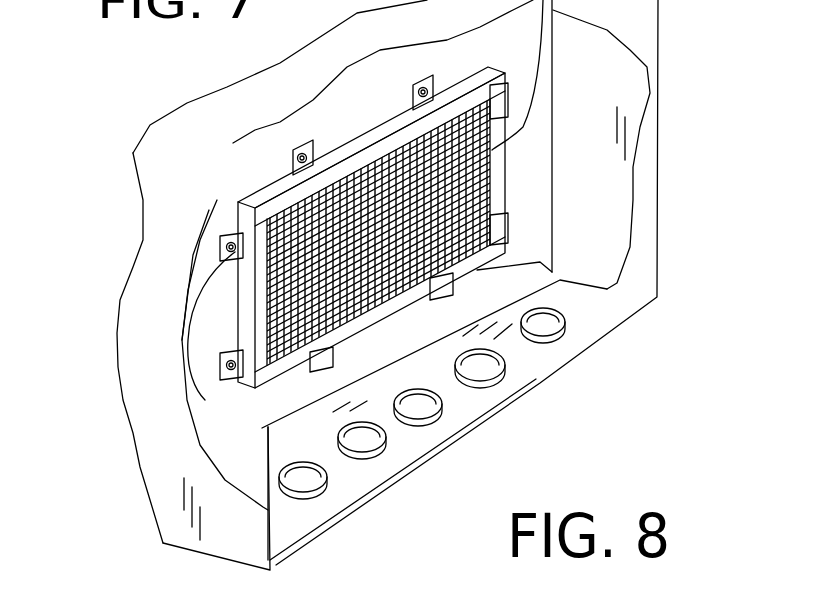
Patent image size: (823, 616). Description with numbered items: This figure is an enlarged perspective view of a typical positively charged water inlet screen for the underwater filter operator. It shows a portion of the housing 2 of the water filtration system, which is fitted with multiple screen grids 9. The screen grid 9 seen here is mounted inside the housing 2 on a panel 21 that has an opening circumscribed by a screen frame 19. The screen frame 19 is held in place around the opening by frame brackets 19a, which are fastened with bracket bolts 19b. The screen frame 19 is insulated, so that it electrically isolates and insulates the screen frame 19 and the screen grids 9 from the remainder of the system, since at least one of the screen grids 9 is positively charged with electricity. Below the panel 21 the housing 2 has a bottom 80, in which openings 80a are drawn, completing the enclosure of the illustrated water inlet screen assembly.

The housing 2 is at (130, 219).
The screen grid 9 is at (381, 172).
The screen frame 19 is at (270, 197).
The frame brackets 19a is at (437, 105).
The bracket bolts 19b is at (230, 243).
The panel 21 is at (330, 107).
The bottom 80 is at (357, 478).
The apertures 80a is at (366, 442).